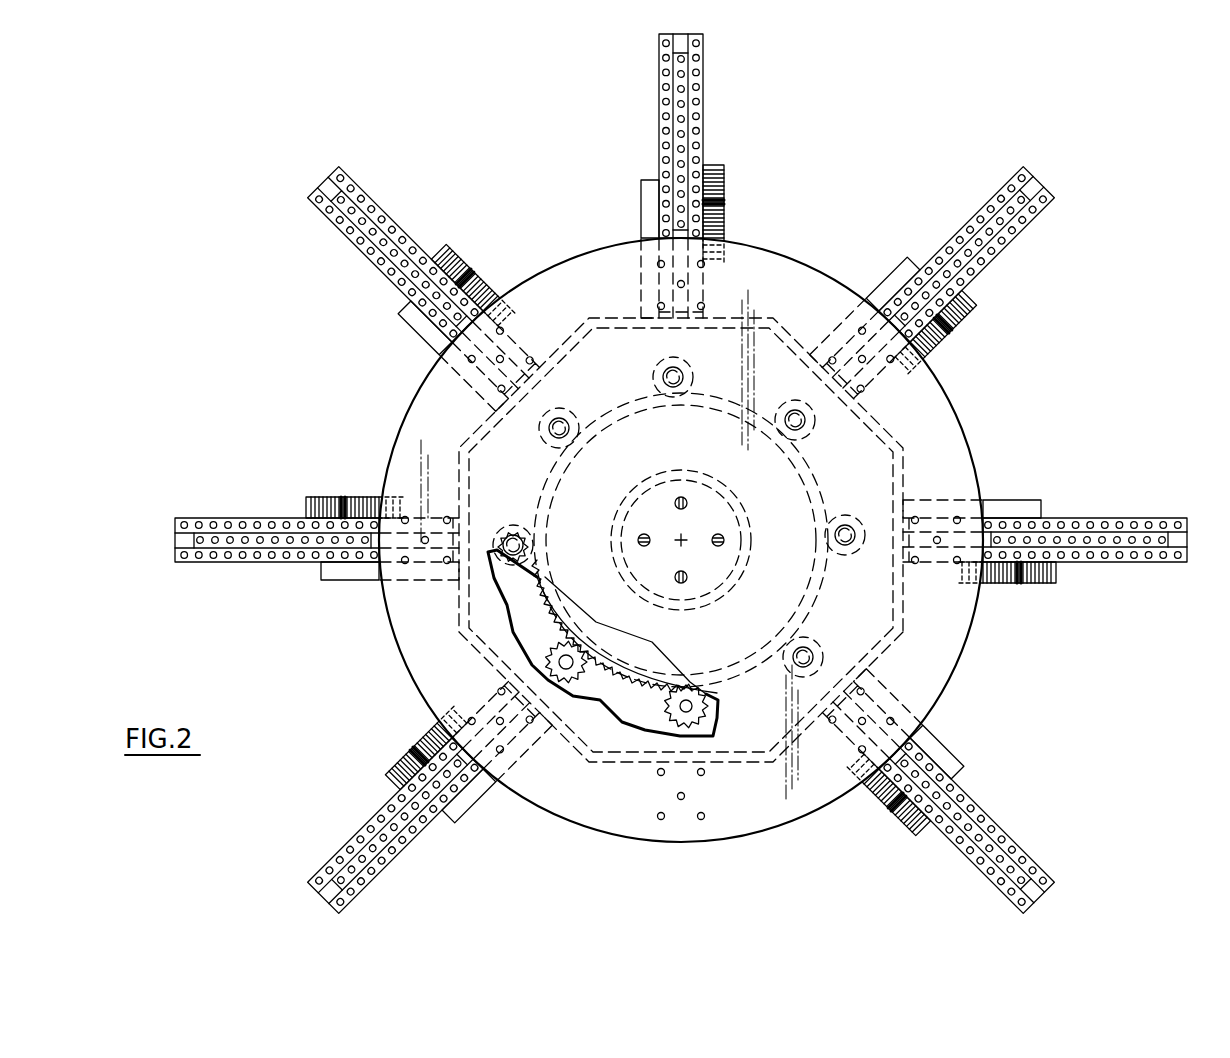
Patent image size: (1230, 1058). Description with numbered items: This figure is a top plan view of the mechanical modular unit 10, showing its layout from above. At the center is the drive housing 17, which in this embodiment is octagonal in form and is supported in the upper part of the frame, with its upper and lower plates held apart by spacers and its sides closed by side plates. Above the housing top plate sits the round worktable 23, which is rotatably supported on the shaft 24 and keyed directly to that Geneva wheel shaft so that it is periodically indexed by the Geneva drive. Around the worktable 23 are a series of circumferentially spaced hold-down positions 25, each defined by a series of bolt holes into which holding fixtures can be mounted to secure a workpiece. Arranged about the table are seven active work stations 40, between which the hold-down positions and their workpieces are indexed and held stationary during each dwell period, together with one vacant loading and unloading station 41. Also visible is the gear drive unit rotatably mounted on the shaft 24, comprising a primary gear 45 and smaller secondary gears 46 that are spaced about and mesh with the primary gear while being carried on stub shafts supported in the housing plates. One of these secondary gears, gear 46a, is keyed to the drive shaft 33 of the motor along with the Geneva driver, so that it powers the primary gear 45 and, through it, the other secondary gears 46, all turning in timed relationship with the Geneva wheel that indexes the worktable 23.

The mechanical modular unit 10 is at (864, 160).
The drive housing 17 is at (893, 431).
The worktable 23 is at (965, 663).
The shaft 24 is at (718, 522).
The hold-down positions 25 is at (660, 306).
The drive shaft of the motor 33 is at (690, 705).
The work stations 40 is at (716, 124).
The vacant loading and unloading station 41 is at (540, 840).
The primary gear 45 is at (575, 600).
The secondary gears 46 is at (574, 678).
The secondary gear keyed to the motor drive shaft 46a is at (703, 716).